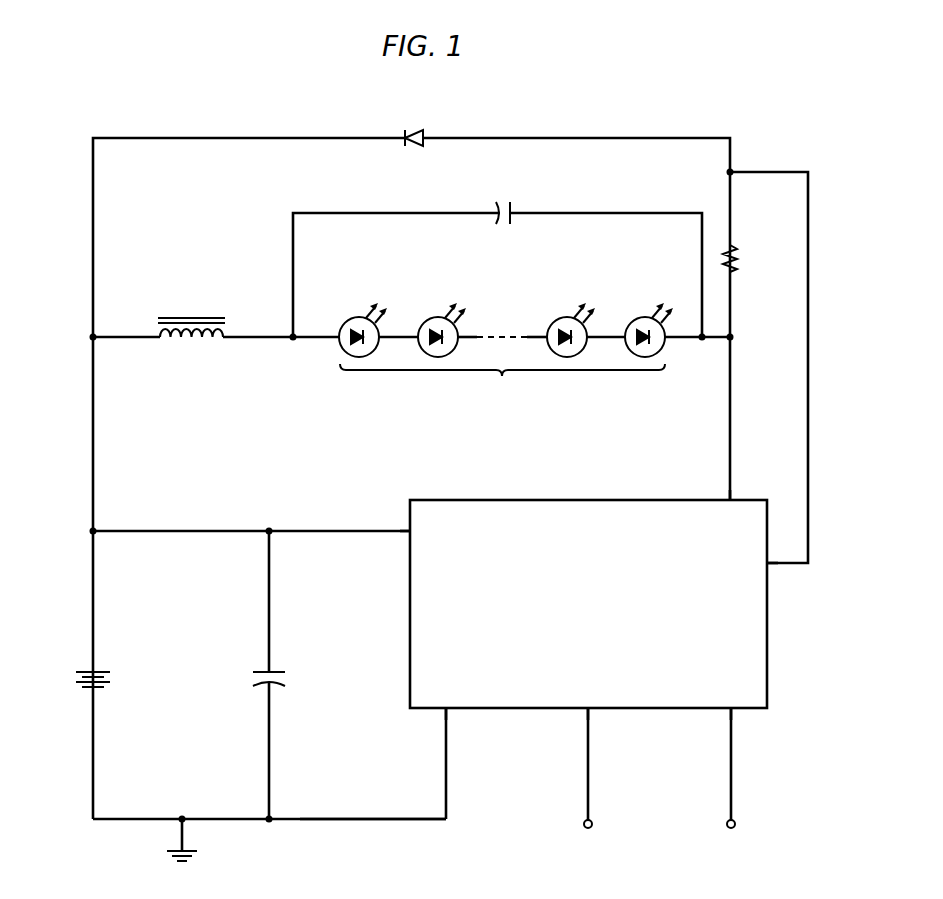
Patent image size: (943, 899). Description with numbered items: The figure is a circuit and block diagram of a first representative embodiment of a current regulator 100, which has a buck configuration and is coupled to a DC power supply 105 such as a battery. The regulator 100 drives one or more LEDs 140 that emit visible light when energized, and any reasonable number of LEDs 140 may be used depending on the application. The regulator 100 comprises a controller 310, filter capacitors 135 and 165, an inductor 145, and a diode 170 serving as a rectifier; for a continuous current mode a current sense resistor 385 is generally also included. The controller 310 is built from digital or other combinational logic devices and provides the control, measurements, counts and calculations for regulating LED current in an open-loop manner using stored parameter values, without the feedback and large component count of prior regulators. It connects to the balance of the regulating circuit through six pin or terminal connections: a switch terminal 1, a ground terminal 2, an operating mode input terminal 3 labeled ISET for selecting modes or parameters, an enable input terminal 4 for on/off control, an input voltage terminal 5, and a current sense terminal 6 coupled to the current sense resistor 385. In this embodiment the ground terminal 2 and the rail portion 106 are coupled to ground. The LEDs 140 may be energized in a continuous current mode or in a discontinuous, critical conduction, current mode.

The current regulator 100 is at (54, 247).
The DC power supply 105 is at (97, 670).
The rail portion 106 is at (343, 822).
The filter capacitor 135 is at (512, 211).
The LEDs 140 is at (506, 353).
The inductor 145 is at (222, 334).
The filter capacitor 165 is at (272, 670).
The diode 170 is at (424, 135).
The controller 310 is at (568, 500).
The current sense resistor 385 is at (738, 256).
The switch terminal 1 is at (733, 497).
The ground terminal 2 is at (448, 712).
The operating mode input terminal 3 is at (590, 712).
The enable input terminal 4 is at (733, 712).
The input voltage terminal 5 is at (410, 528).
The current sense terminal 6 is at (769, 566).